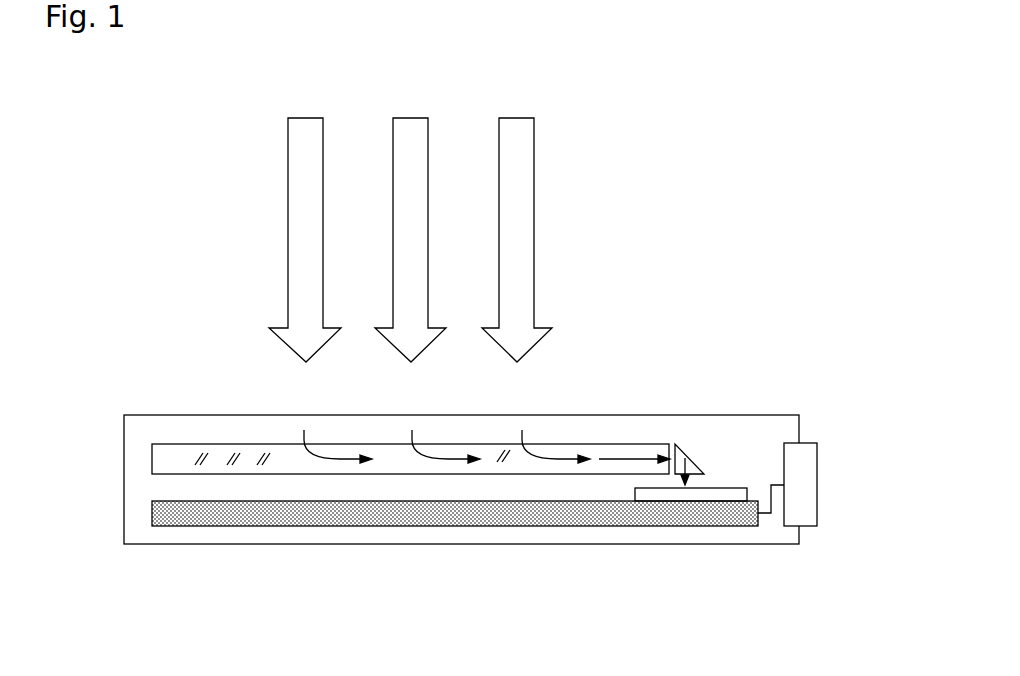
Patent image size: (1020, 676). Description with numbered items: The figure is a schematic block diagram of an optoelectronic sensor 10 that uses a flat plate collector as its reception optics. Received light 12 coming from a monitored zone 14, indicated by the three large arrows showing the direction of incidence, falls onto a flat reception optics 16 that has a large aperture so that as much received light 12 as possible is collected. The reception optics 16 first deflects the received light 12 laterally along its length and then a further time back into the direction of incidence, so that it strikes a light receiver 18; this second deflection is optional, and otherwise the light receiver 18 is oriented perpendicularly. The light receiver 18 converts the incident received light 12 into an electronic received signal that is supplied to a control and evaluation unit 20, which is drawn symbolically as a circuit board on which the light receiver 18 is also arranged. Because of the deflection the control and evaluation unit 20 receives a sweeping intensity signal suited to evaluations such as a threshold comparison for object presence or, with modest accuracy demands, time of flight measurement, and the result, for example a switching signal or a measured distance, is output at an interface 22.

The optoelectronic sensor 10 is at (799, 415).
The received light 12 is at (525, 203).
The monitored zone 14 is at (459, 207).
The reception optics 16 is at (183, 460).
The light receiver 18 is at (733, 490).
The control and evaluation unit 20 is at (312, 508).
The interface 22 is at (808, 483).